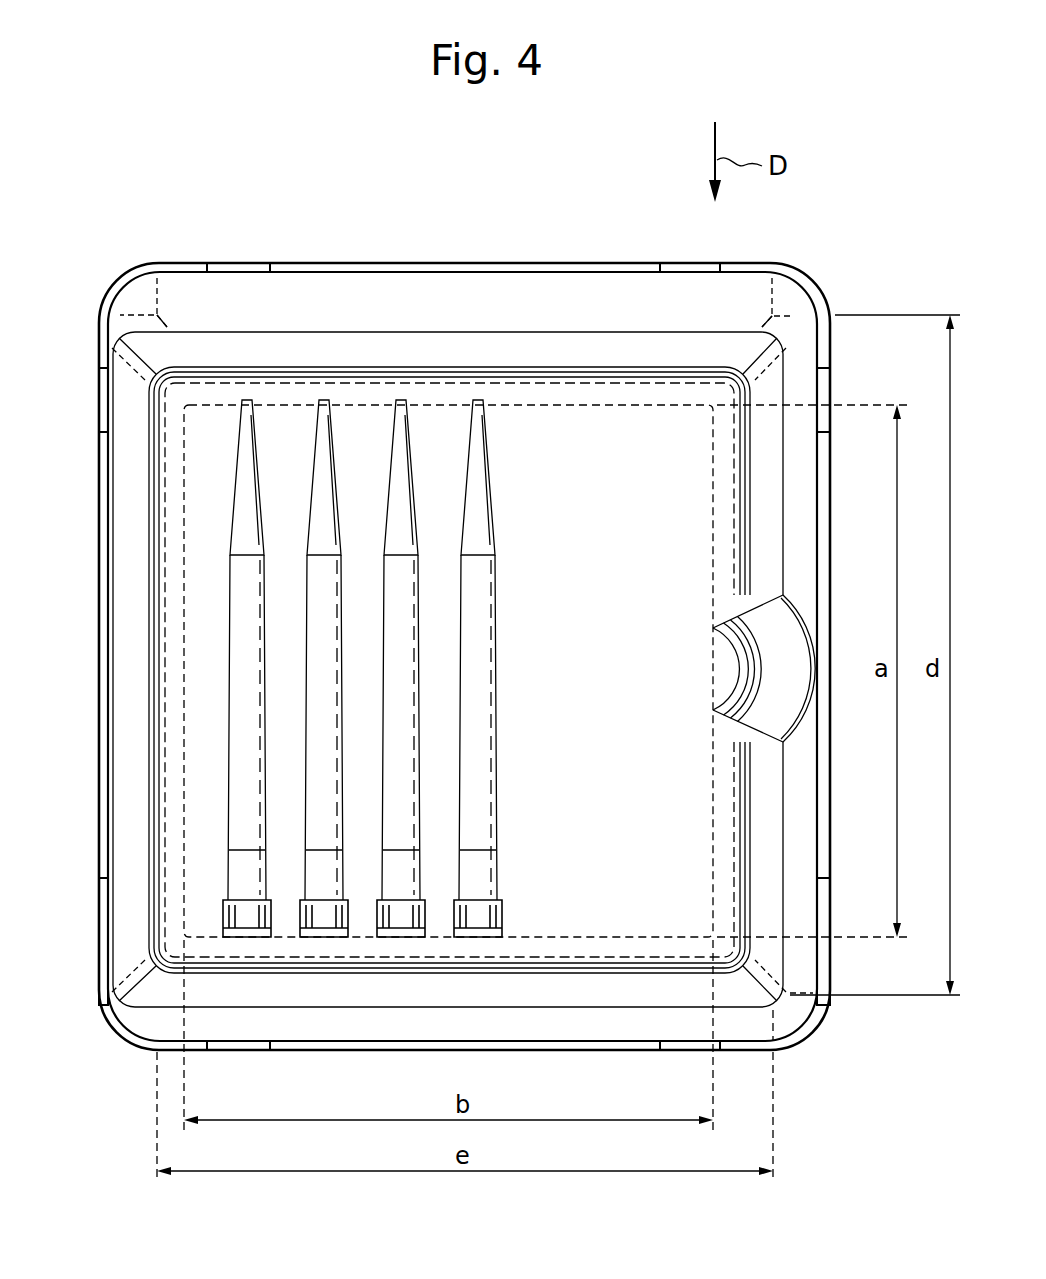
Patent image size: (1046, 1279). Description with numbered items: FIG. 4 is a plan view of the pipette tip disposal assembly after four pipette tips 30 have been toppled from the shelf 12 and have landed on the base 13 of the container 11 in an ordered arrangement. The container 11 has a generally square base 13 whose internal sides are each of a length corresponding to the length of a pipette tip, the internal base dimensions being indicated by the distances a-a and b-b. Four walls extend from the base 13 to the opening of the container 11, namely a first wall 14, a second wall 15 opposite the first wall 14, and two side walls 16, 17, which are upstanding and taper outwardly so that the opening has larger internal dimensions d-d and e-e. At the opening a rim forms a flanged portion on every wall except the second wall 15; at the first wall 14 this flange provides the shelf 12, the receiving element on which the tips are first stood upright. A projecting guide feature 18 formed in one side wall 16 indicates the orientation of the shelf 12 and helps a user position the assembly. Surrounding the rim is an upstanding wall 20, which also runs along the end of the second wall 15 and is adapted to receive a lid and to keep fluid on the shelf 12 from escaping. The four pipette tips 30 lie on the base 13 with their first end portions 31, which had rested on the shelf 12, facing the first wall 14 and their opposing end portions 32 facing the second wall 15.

The container 11 is at (455, 262).
The shelf 12 is at (352, 295).
The base 13 is at (680, 482).
The first wall 14 is at (613, 340).
The second wall 15 is at (601, 992).
The side wall 16 is at (765, 532).
The side wall 17 is at (128, 567).
The projecting guide feature 18 is at (785, 705).
The upstanding wall 20 is at (833, 840).
The pipette tip 30 is at (240, 686).
The lower end portion 31 is at (243, 497).
The opposing end portion 32 is at (240, 875).